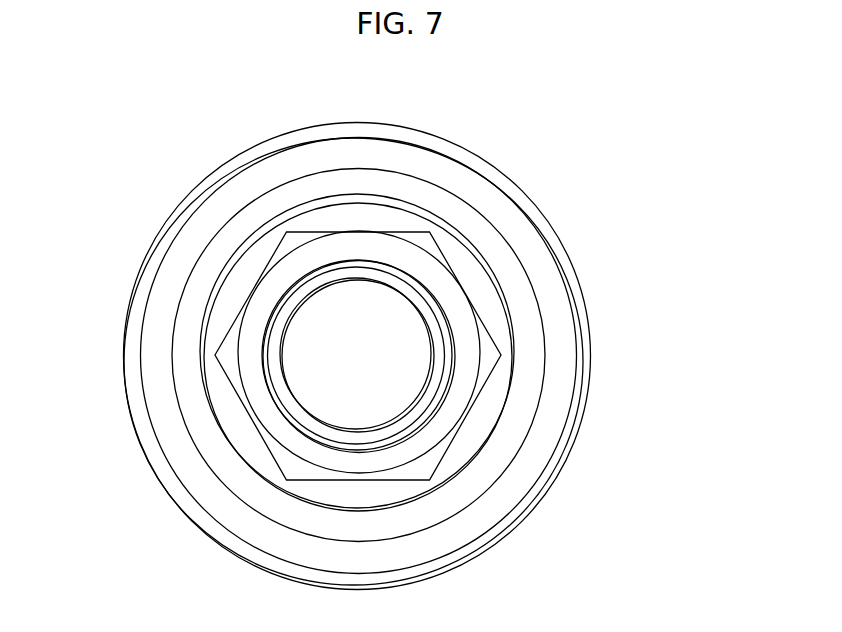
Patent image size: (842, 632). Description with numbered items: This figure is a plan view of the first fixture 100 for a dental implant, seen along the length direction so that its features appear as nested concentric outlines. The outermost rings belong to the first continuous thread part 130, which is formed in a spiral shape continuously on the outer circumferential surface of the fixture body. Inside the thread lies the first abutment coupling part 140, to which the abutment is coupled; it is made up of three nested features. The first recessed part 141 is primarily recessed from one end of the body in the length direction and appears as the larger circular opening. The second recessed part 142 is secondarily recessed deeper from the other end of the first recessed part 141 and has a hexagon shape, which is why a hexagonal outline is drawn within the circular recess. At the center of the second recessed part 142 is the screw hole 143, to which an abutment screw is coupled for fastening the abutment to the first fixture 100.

The first fixture 100 is at (158, 184).
The first continuous thread part 130 is at (562, 488).
The first abutment coupling part 140 is at (696, 263).
The first recessed part 141 is at (472, 275).
The second recessed part 142 is at (453, 332).
The screw hole 143 is at (410, 375).